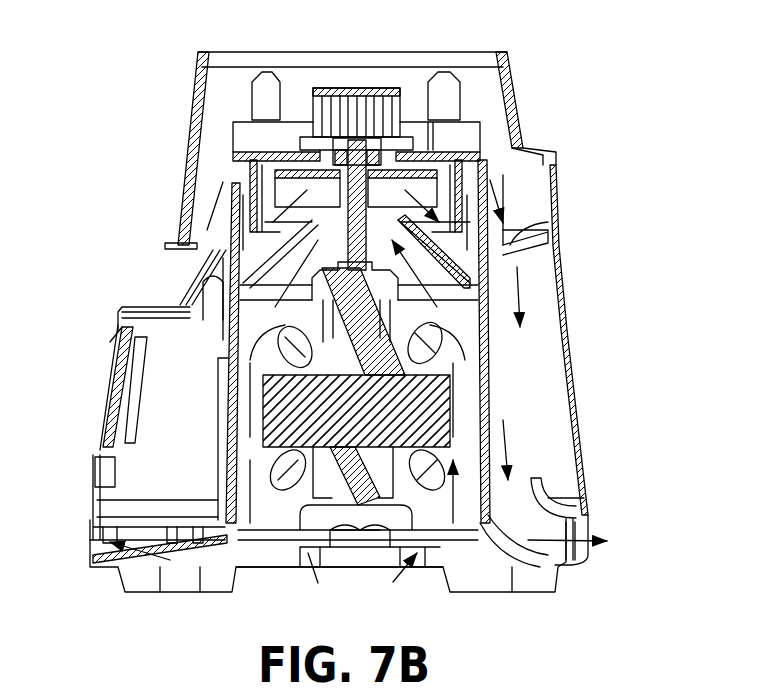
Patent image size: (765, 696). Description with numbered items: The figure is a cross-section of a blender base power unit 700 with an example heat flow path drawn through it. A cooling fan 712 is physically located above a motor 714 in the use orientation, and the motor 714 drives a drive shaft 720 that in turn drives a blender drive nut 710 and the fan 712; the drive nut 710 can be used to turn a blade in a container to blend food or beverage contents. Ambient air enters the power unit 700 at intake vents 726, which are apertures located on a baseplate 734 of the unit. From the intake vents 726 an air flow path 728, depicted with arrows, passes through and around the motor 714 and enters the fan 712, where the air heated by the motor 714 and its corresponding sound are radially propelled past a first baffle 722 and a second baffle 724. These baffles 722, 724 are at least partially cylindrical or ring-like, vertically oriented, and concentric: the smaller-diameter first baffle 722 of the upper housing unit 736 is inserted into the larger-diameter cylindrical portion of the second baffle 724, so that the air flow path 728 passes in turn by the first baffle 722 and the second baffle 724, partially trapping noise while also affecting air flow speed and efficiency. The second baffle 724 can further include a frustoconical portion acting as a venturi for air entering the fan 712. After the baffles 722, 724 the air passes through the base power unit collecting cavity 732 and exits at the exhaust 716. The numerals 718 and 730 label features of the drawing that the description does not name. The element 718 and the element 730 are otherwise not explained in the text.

The blender base power unit 700 is at (223, 33).
The blender drive nut 710 is at (367, 110).
The cooling fan 712 is at (383, 190).
The motor 714 is at (415, 408).
The exhaust 716 is at (545, 550).
The deflector 718 is at (205, 253).
The drive shaft 720 is at (337, 197).
The first baffle 722 is at (480, 208).
The second baffle 724 is at (513, 217).
The intake vents 726 is at (428, 570).
The air flow path 728 is at (522, 283).
The side wall 730 is at (162, 400).
The base power unit collecting cavity 732 is at (538, 407).
The baseplate 734 is at (383, 527).
The upper housing unit 736 is at (540, 277).